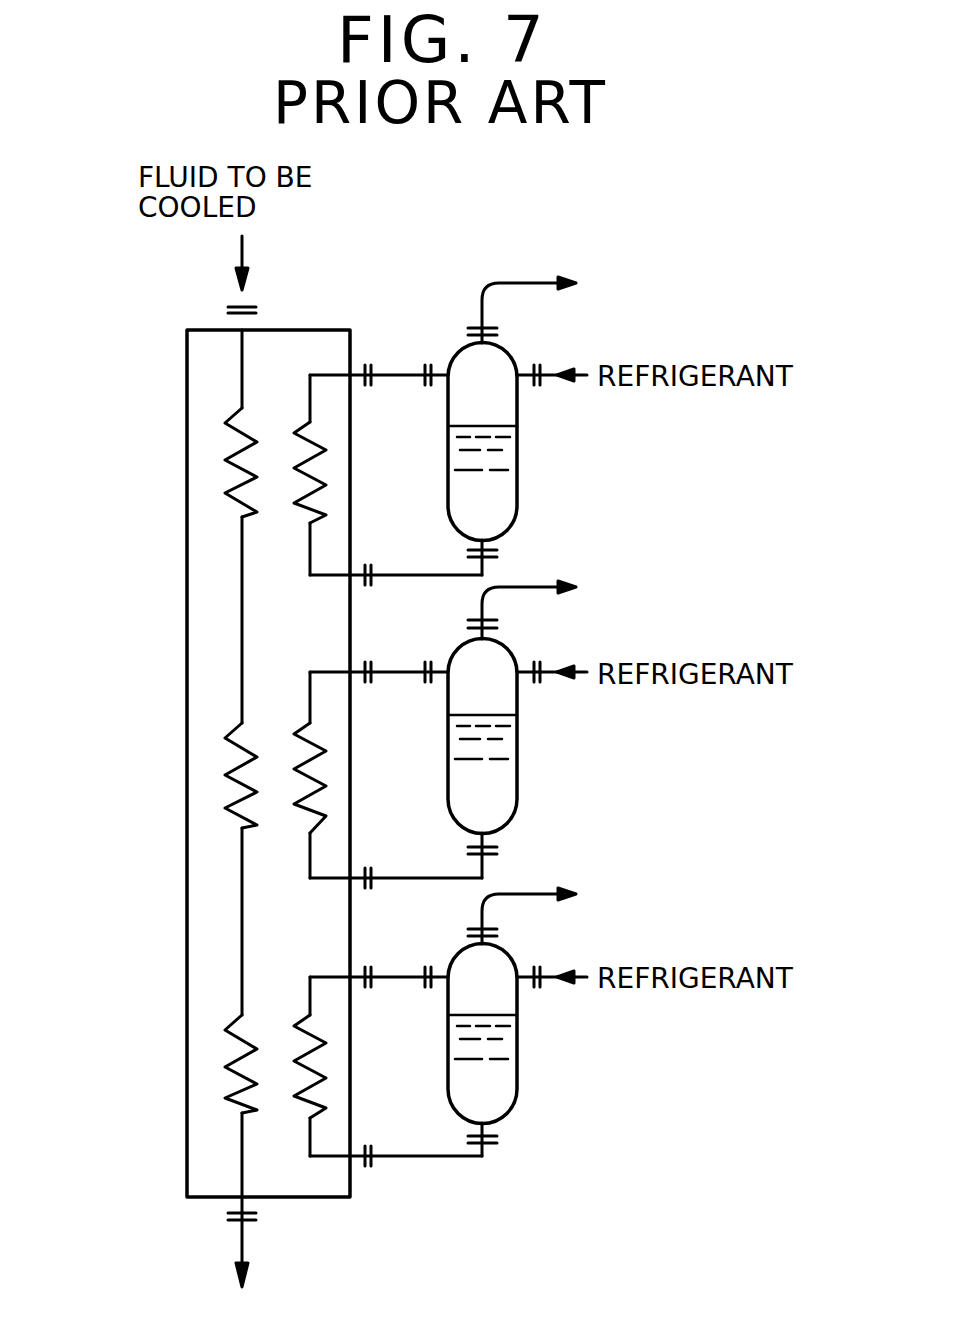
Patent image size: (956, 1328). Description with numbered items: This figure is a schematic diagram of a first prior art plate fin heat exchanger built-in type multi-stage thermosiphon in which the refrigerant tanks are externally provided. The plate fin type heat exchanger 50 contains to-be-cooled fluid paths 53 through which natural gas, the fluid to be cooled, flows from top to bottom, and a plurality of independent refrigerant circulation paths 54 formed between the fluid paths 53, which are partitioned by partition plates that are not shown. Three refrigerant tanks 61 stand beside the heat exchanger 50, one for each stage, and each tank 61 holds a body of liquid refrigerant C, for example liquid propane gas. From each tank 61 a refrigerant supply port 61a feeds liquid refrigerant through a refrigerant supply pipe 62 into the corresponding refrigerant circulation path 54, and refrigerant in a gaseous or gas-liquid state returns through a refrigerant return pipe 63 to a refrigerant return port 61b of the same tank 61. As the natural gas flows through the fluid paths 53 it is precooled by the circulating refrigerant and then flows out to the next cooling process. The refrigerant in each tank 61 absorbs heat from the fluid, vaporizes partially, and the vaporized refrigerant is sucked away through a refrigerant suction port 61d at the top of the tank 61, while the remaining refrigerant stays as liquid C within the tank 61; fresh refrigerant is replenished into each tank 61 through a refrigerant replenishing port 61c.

The plate fin type heat exchanger 50 is at (152, 366).
The to-be-cooled fluid path 53 is at (230, 490).
The refrigerant circulation path 54 is at (313, 473).
The refrigerant tank 61 is at (518, 489).
The refrigerant supply port 61a is at (484, 551).
The refrigerant return port 61b is at (423, 384).
The refrigerant replenishing port 61c is at (543, 366).
The refrigerant suction port 61d is at (480, 326).
The refrigerant supply pipe 62 is at (417, 573).
The refrigerant return pipe 63 is at (400, 370).
The liquid refrigerant C is at (500, 457).